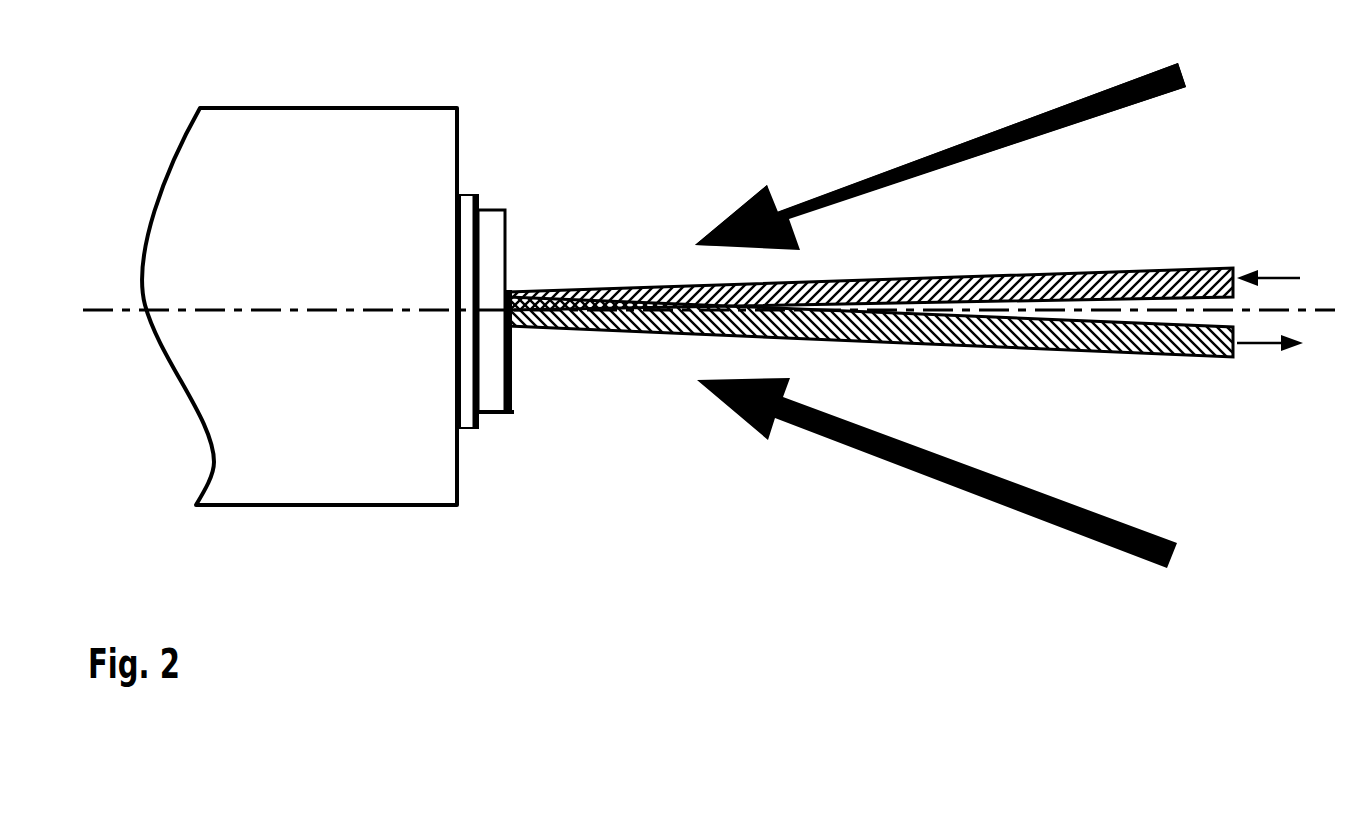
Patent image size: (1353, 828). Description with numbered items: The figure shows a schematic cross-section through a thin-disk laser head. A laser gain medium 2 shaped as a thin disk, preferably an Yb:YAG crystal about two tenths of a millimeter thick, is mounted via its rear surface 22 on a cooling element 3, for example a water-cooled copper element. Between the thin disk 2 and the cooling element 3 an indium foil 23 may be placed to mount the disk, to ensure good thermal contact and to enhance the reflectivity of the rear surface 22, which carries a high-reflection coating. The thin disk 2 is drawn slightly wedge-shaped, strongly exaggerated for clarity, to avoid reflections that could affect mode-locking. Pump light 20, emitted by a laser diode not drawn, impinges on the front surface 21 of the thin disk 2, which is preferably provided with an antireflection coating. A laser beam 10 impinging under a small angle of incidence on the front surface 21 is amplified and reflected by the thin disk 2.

The laser gain medium 2 is at (490, 236).
The cooling element 3 is at (348, 128).
The laser beam 10 is at (1128, 268).
The pump light 20 is at (924, 148).
The front surface 21 is at (514, 395).
The rear surface 22 is at (470, 396).
The indium foil 23 is at (463, 193).